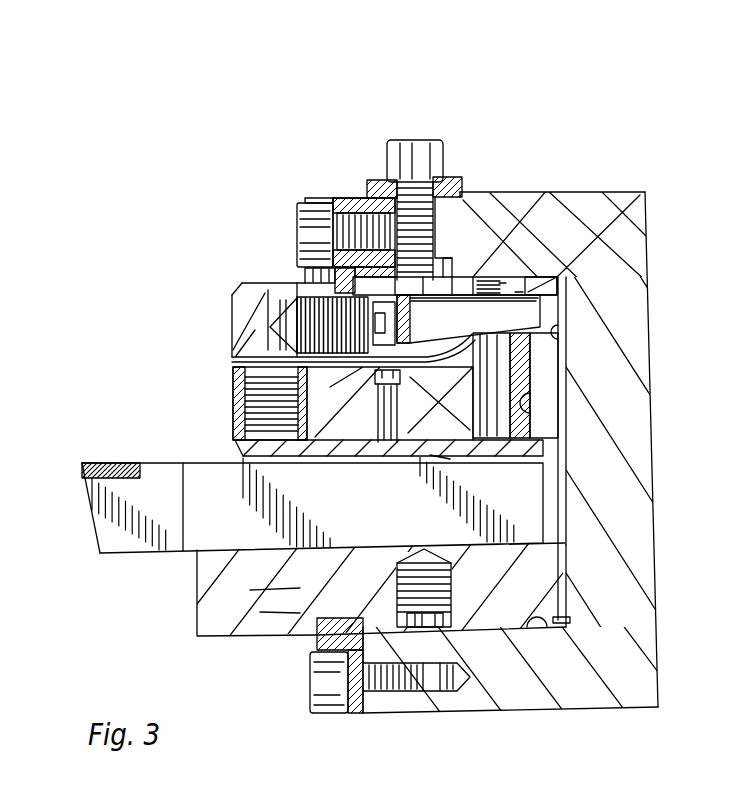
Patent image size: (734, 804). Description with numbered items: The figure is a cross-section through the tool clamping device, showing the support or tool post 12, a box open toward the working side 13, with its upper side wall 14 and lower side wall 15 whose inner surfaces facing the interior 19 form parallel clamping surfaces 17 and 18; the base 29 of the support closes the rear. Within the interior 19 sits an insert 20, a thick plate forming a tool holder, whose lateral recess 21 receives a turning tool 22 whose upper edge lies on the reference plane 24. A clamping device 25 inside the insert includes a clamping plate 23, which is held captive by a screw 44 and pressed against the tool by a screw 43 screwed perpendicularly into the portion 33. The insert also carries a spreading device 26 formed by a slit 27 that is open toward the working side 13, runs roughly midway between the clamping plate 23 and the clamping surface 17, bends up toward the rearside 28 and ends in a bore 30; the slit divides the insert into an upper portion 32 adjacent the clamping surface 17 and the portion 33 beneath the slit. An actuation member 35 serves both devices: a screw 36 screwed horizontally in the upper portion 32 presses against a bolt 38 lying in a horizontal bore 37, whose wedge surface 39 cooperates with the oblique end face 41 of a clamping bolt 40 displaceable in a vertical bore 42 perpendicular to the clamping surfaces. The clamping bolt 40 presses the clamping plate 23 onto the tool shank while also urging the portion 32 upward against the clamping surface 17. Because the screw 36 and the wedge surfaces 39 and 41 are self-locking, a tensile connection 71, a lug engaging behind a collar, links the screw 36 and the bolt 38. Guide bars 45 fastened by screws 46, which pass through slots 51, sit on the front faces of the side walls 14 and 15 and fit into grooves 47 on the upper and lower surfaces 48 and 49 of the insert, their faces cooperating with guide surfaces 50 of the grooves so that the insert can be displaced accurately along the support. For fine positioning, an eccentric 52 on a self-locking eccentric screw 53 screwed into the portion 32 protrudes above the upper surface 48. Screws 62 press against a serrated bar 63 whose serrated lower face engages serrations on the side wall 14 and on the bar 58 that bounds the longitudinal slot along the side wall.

The support 12 is at (643, 637).
The working side 13 is at (133, 304).
The upper side wall 14 is at (490, 203).
The lower side wall 15 is at (535, 697).
The clamping surface 17 is at (502, 283).
The clamping surface 18 is at (573, 626).
The interior 19 is at (563, 618).
The insert 20 is at (572, 556).
The lateral recess 21 is at (173, 550).
The turning tool 22 is at (127, 527).
The clamping plate 23 is at (533, 447).
The reference plane 24 is at (78, 463).
The clamping device 25 is at (228, 392).
The spreading device 26 is at (226, 280).
The slit 27 is at (260, 362).
The rearside 28 is at (572, 322).
The base 29 is at (510, 367).
The bore 30 is at (558, 285).
The upper portion 32 is at (457, 297).
The portion 33 is at (358, 423).
The actuation member 35 is at (519, 292).
The screw 36 is at (253, 285).
The horizontal bore 37 is at (458, 258).
The bolt 38 is at (350, 288).
The wedge surface 39 is at (553, 302).
The clamping bolt 40 is at (580, 333).
The oblique end face 41 is at (583, 190).
The vertical bore 42 is at (523, 417).
The screw 43 is at (250, 413).
The screw 44 is at (440, 457).
The guide bars 45 is at (357, 713).
The screws 46 is at (323, 682).
The grooves 47 is at (337, 618).
The upper surface 48 is at (250, 283).
The lower surface 49 is at (237, 635).
The guide surfaces 50 is at (317, 618).
The slots 51 is at (357, 655).
The eccentric 52 is at (430, 618).
The eccentric screw 53 is at (450, 583).
The bar 58 is at (353, 207).
The screws 62 is at (410, 147).
The serrated bar 63 is at (378, 180).
The tensile connection 71 is at (298, 283).